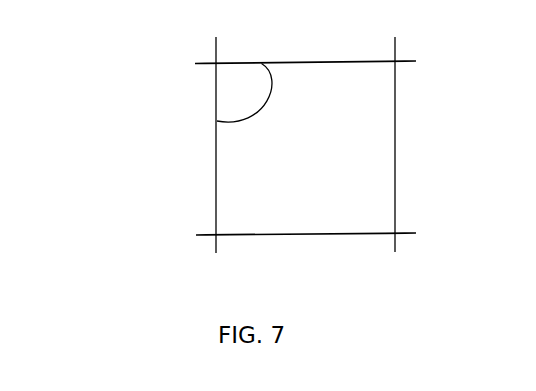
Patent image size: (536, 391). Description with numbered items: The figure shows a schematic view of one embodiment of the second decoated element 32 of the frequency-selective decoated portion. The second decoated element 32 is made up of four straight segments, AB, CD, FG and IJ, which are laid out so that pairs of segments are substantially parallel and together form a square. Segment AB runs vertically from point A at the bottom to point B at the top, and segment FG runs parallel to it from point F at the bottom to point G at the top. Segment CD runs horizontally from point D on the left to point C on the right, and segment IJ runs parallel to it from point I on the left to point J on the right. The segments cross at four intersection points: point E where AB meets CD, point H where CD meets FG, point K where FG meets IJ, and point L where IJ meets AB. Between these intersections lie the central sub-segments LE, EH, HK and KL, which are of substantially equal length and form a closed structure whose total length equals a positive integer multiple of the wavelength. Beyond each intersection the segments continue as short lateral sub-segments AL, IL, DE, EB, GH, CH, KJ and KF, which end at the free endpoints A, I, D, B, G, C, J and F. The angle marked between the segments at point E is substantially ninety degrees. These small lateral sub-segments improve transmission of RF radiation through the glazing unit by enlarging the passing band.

The second decoated element 32 is at (120, 36).
The endpoint A of segment AB A is at (213, 268).
The endpoint B of segment AB B is at (212, 30).
The endpoint C of segment CD C is at (425, 66).
The endpoint D of segment CD D is at (185, 63).
The intersection point E is at (219, 66).
The endpoint F of segment FG F is at (398, 268).
The endpoint G of segment FG G is at (395, 25).
The intersection point H is at (388, 75).
The endpoint I of segment IJ I is at (192, 239).
The endpoint J of segment IJ J is at (422, 234).
The intersection point K is at (389, 229).
The intersection point L is at (222, 230).